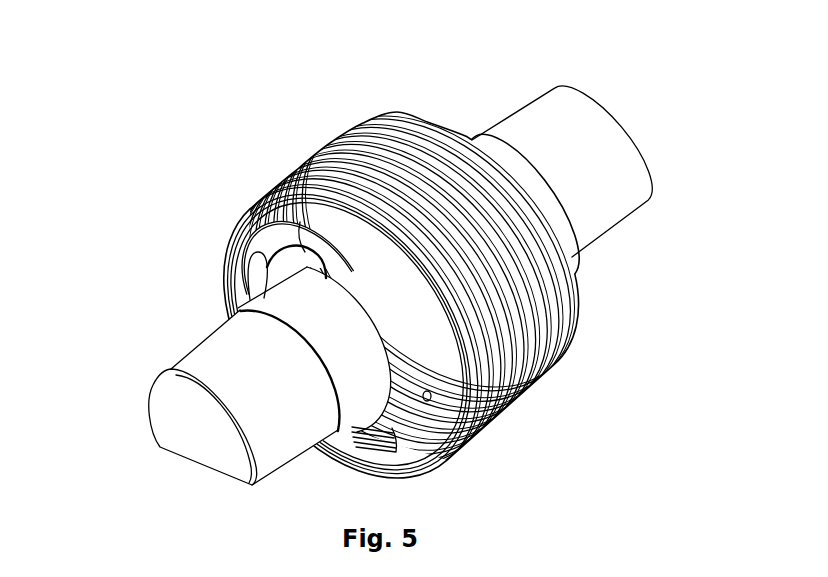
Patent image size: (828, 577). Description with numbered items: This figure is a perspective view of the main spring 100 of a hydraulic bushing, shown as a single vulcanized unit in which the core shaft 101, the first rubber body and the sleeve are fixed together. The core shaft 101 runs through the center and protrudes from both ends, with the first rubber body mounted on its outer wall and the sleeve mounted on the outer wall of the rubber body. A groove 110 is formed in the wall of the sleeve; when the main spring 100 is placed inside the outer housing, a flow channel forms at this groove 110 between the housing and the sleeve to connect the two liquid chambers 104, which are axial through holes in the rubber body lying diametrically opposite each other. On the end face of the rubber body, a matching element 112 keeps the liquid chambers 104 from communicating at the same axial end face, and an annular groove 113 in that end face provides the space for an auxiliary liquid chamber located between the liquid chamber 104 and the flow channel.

The main spring 100 is at (365, 278).
The core shaft 101 is at (238, 353).
The liquid chamber 104 is at (447, 400).
The groove 110 is at (372, 116).
The matching element 112 is at (288, 196).
The annular groove 113 is at (273, 244).